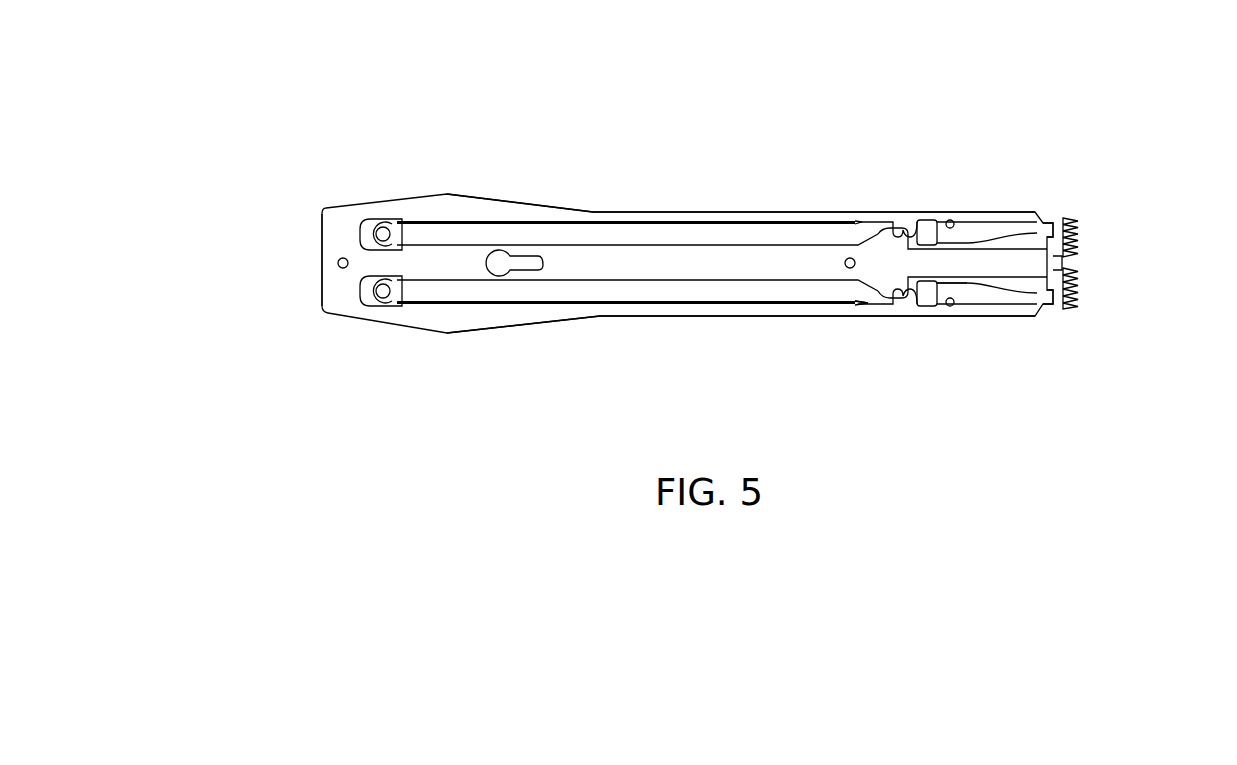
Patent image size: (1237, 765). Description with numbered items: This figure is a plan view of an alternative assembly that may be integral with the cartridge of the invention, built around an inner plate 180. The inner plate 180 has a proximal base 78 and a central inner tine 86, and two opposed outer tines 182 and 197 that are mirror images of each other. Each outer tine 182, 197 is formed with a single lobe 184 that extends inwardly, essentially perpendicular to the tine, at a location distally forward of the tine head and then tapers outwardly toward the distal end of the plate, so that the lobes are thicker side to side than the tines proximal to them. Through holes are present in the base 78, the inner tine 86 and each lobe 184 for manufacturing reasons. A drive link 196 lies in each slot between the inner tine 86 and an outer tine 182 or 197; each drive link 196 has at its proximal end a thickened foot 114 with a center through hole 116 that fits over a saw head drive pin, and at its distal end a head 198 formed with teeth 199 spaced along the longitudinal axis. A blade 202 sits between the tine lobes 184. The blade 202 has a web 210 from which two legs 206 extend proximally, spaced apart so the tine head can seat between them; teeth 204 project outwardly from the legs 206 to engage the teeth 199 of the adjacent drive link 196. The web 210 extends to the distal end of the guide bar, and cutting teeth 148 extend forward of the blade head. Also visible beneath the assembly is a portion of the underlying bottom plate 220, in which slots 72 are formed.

The base 78 is at (338, 303).
The inner plate 180 is at (340, 227).
The foot 114 is at (388, 226).
The through hole 116 is at (385, 293).
The drive link 196 is at (482, 232).
The outer tine 197 is at (653, 213).
The outer tine 182 is at (707, 312).
The inner tine 86 is at (722, 262).
The web 210 is at (1030, 276).
The teeth 199 is at (909, 232).
The teeth 204 is at (908, 296).
The lobe 184 is at (975, 226).
The leg 206 is at (947, 302).
The head 198 is at (870, 305).
The bottom plate 220 is at (1046, 230).
The slot 72 is at (1023, 297).
The blade 202 is at (1085, 233).
The teeth 148 is at (1080, 292).